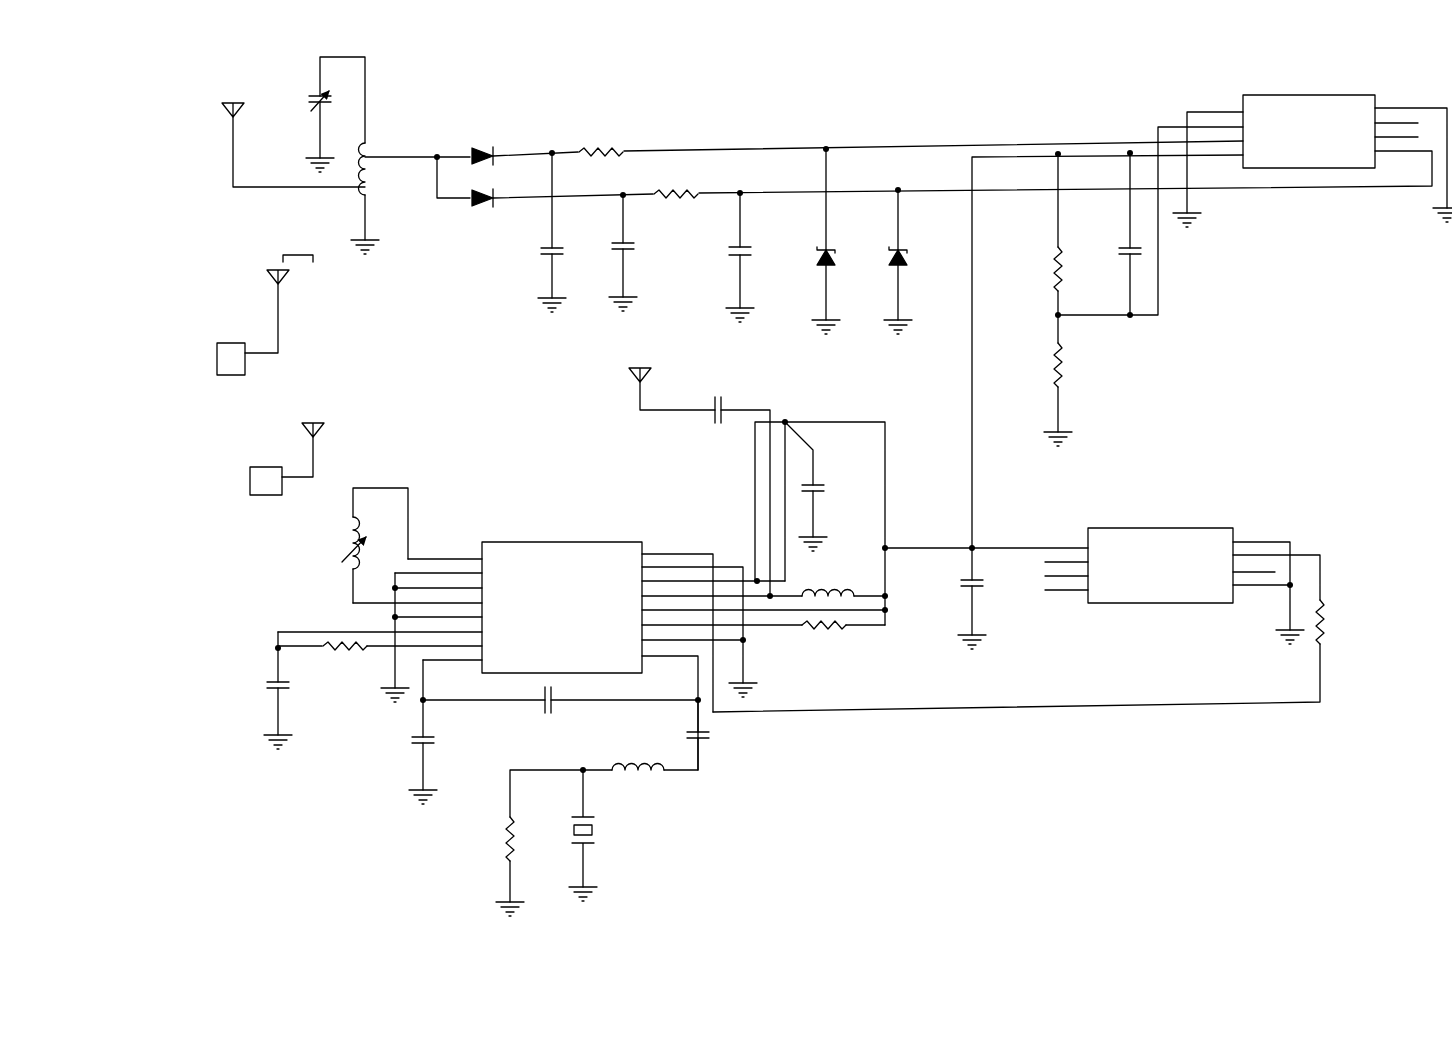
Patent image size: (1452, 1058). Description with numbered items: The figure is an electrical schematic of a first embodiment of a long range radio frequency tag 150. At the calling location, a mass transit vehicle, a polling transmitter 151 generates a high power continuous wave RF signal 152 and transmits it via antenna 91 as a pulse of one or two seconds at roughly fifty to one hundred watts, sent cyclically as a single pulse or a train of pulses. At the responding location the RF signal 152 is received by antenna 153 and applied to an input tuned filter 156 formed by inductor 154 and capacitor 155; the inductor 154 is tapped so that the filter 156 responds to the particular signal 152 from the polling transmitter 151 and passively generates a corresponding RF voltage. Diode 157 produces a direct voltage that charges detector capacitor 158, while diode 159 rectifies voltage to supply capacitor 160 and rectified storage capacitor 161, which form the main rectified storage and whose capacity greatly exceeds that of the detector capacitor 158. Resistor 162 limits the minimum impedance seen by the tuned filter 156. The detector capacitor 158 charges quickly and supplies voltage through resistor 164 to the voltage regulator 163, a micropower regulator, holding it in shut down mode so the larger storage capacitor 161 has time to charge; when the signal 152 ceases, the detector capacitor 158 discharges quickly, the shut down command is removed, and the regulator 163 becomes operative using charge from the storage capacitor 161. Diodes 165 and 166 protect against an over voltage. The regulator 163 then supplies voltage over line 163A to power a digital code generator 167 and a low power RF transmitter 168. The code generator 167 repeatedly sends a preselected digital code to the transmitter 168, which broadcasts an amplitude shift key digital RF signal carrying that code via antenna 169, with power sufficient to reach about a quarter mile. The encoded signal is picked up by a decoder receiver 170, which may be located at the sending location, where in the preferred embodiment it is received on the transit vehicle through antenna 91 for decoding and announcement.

The long range radio frequency tag 150 is at (816, 80).
The polling transmitter 151 is at (306, 420).
The continuous wave radio frequency signal 152 is at (313, 254).
The antenna 153 is at (228, 105).
The inductor 154 is at (366, 142).
The capacitor 155 is at (314, 99).
The input tuned filter 156 is at (366, 96).
The diode 157 is at (480, 148).
The detector capacitor 158 is at (553, 247).
The diode 159 is at (476, 205).
The capacitor 160 is at (622, 252).
The rectified storage capacitor 161 is at (752, 247).
The resistor 162 is at (697, 192).
The voltage regulator 163 is at (1240, 85).
The line 163A is at (972, 328).
The resistor 164 is at (583, 149).
The diode 165 is at (833, 265).
The diode 166 is at (905, 265).
The digital code generator 167 is at (1168, 502).
The low power RF transmitter 168 is at (478, 522).
The antenna 169 is at (630, 369).
The decoder receiver 170 is at (253, 466).
The antenna 91 is at (268, 274).